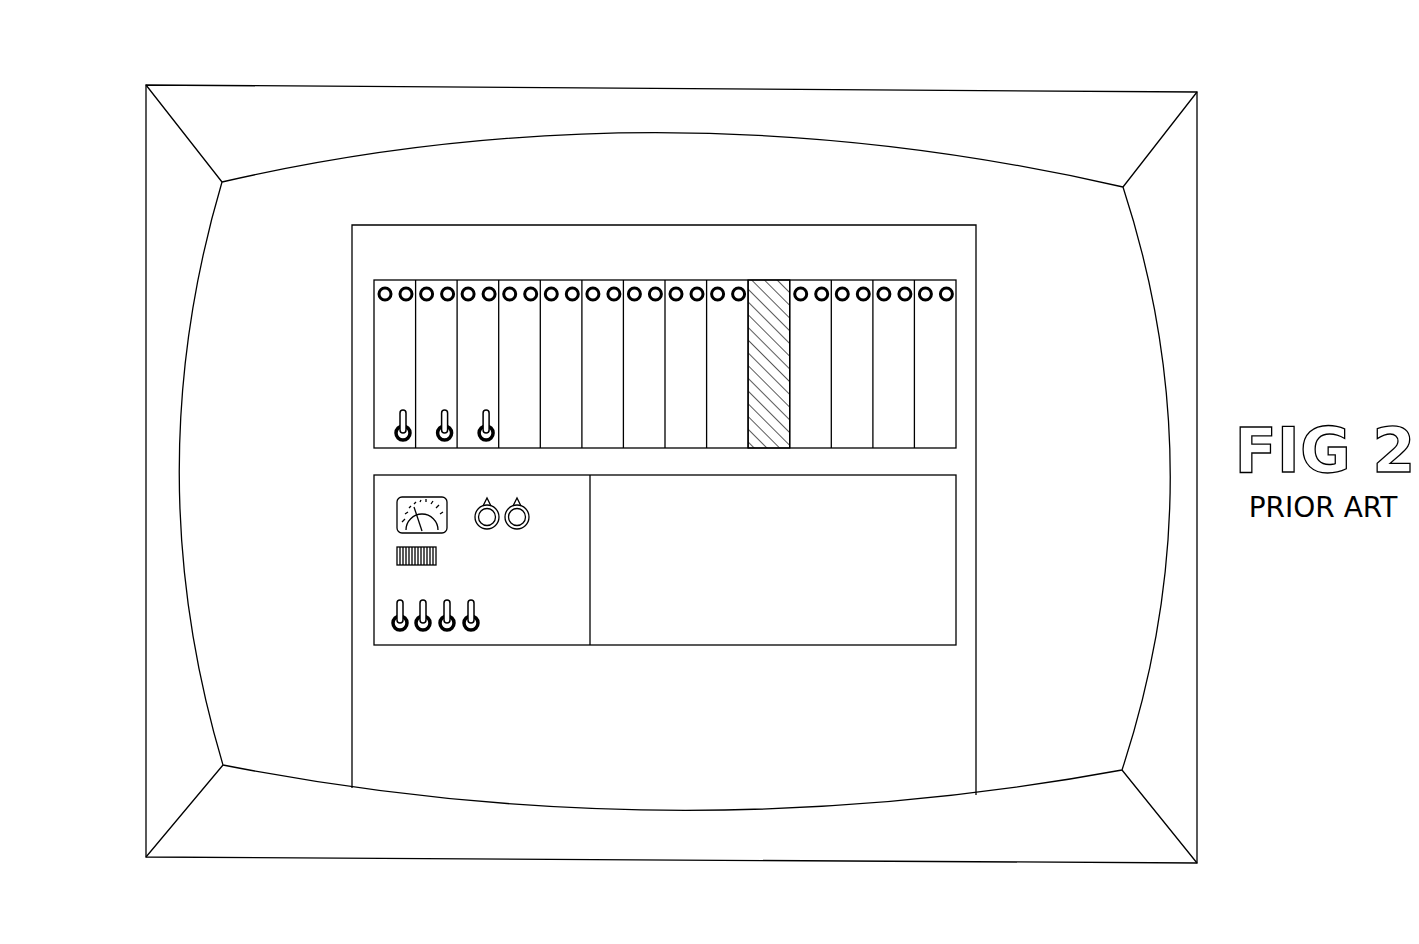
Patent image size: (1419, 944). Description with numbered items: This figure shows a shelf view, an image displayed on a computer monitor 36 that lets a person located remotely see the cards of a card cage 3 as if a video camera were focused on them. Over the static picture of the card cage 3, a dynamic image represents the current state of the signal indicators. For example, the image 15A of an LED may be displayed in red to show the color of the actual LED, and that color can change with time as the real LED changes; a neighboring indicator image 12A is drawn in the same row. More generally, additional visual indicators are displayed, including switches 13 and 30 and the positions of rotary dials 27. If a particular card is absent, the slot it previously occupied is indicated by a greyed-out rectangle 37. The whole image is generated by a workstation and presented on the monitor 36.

The card cage 3 is at (590, 286).
The indicator 12A is at (406, 283).
The switches 13 is at (400, 418).
The image 15A is at (385, 283).
The rotary dials 27 is at (545, 522).
The switches 30 is at (665, 626).
The computer monitor 36 is at (1197, 697).
The greyed-out rectangle 37 is at (768, 281).